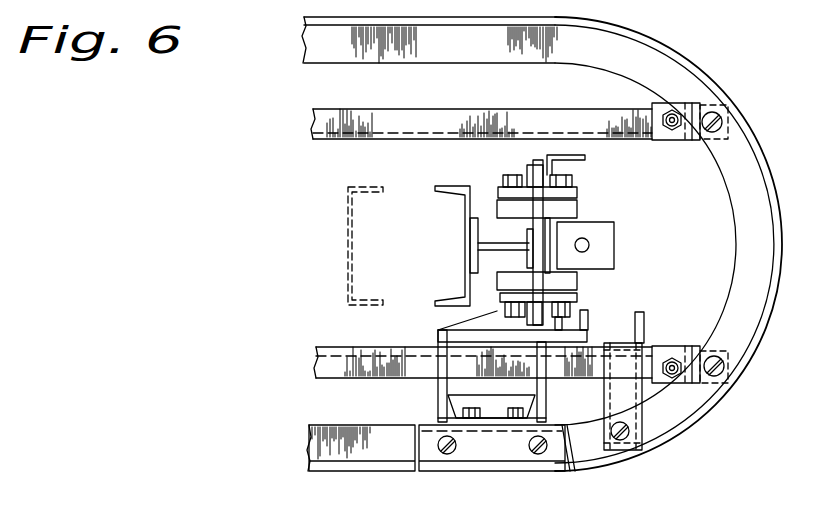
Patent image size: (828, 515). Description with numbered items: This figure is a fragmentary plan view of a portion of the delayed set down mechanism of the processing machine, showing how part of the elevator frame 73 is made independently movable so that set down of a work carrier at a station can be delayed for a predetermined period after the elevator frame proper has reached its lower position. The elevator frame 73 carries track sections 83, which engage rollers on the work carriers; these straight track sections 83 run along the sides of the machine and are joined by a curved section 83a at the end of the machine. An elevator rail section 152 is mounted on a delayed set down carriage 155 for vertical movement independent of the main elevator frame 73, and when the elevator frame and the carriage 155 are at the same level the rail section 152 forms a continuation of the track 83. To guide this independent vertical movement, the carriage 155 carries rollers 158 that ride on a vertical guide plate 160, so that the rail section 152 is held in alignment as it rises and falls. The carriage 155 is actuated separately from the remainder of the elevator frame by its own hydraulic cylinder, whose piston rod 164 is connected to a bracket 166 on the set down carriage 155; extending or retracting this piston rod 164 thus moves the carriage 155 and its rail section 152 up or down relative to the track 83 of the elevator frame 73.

The elevator frame 73 is at (708, 68).
The track section 83 is at (341, 52).
The curved track section 83a is at (685, 405).
The elevator rail section 152 is at (507, 456).
The delayed set down carriage 155 is at (572, 318).
The roller 158 is at (570, 209).
The vertical guide plate 160 is at (533, 261).
The piston rod 164 is at (587, 242).
The bracket 166 is at (613, 262).